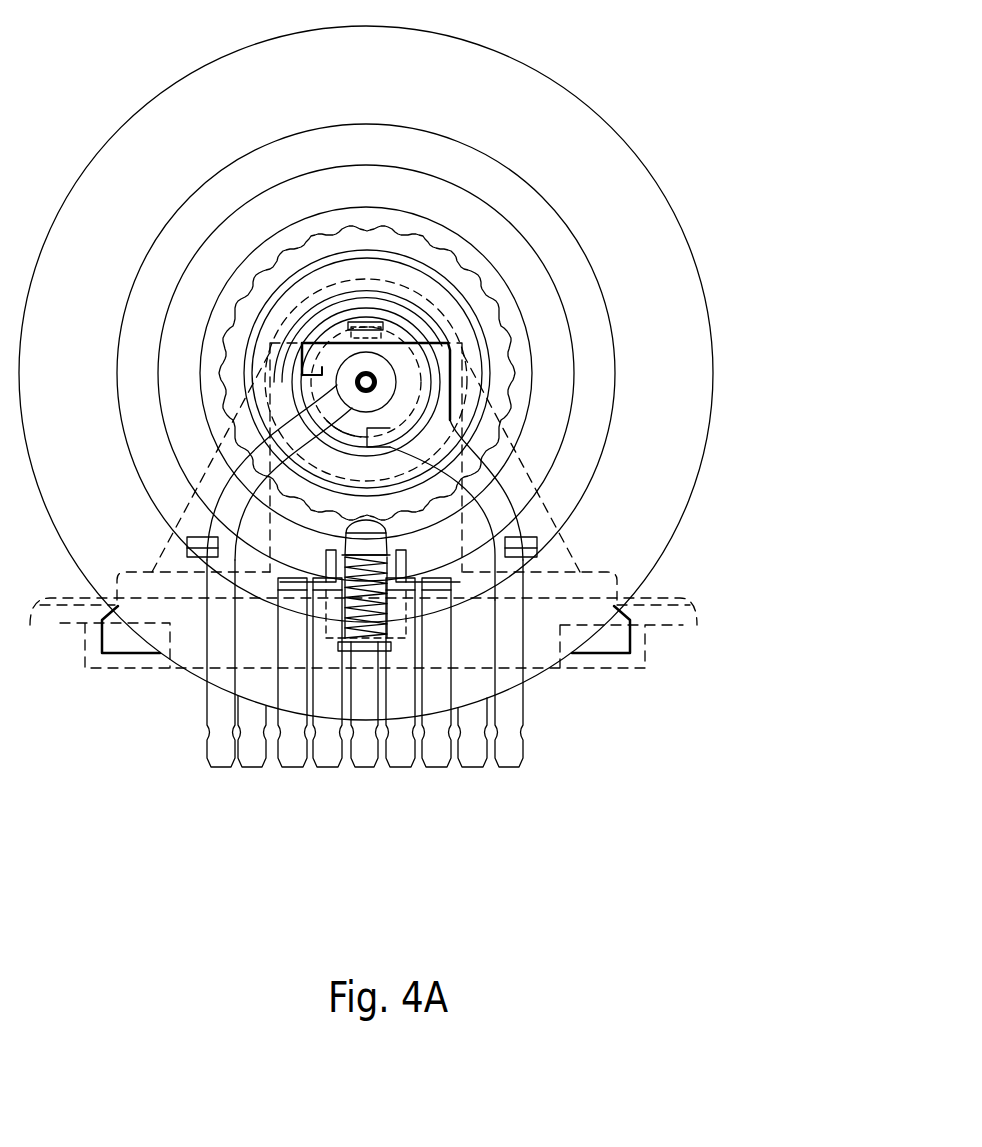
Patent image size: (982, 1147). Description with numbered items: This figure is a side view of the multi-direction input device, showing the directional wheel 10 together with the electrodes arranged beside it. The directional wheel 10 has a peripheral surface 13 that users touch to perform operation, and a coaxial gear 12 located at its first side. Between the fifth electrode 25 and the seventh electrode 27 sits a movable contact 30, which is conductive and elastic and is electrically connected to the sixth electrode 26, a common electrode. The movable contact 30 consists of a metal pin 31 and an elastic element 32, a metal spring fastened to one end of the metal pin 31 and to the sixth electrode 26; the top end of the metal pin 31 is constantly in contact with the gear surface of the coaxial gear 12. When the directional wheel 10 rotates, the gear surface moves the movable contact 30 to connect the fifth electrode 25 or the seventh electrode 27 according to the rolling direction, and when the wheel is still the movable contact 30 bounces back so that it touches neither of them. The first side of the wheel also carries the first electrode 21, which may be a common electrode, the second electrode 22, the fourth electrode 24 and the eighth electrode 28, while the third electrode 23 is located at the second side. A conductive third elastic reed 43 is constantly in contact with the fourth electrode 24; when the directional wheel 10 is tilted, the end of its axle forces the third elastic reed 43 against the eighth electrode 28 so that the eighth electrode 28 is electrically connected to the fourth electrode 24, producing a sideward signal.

The directional wheel 10 is at (536, 68).
The peripheral surface 13 is at (565, 115).
The coaxial gear 12 is at (493, 301).
The third elastic reed 43 is at (417, 367).
The metal pin 31 is at (397, 622).
The movable contact 30 is at (560, 657).
The elastic element 32 is at (400, 635).
The first electrode 21 is at (477, 757).
The second electrode 22 is at (328, 757).
The third electrode 23 is at (255, 757).
The fourth electrode 24 is at (220, 757).
The fifth electrode 25 is at (292, 757).
The sixth electrode 26 is at (365, 757).
The seventh electrode 27 is at (438, 757).
The eighth electrode 28 is at (512, 757).